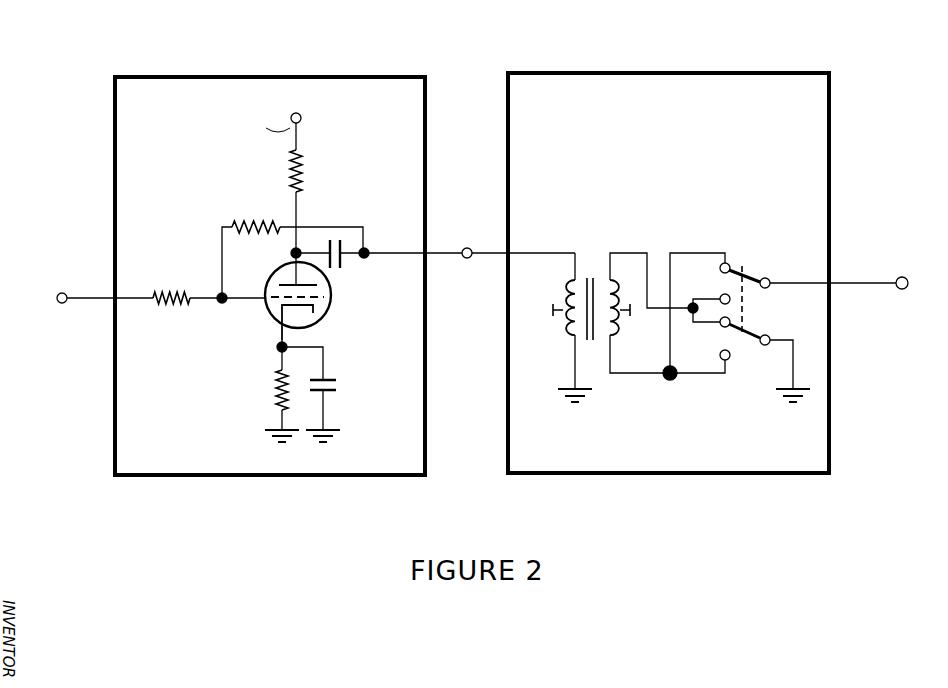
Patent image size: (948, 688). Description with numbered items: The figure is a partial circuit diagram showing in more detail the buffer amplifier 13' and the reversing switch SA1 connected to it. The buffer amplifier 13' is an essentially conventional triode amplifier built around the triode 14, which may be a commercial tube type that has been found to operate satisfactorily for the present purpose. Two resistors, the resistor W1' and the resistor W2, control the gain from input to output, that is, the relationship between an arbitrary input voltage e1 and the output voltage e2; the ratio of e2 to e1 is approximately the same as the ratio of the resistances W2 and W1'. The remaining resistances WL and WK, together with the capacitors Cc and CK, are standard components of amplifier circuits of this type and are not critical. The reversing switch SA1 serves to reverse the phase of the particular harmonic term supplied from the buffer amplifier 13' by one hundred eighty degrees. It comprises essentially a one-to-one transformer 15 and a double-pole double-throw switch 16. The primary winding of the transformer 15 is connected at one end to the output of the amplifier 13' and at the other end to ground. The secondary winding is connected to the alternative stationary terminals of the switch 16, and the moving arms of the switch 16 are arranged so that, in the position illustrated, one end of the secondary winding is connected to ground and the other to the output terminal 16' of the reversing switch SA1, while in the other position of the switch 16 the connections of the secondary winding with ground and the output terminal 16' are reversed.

The buffer amplifier 13' is at (270, 260).
The triode 14 is at (322, 294).
The transformer 15 is at (592, 262).
The double-pole double-throw switch 16 is at (736, 327).
The output terminal 16' is at (850, 271).
The input voltage e1 is at (90, 299).
The output voltage e2 is at (513, 242).
The resistor W1' is at (208, 311).
The resistor W2 is at (292, 249).
The load resistance WL is at (318, 197).
The cathode resistance WK is at (276, 380).
The coupling capacitor Cc is at (343, 258).
The cathode capacitor CK is at (338, 388).
The reversing switch SA1 is at (675, 97).